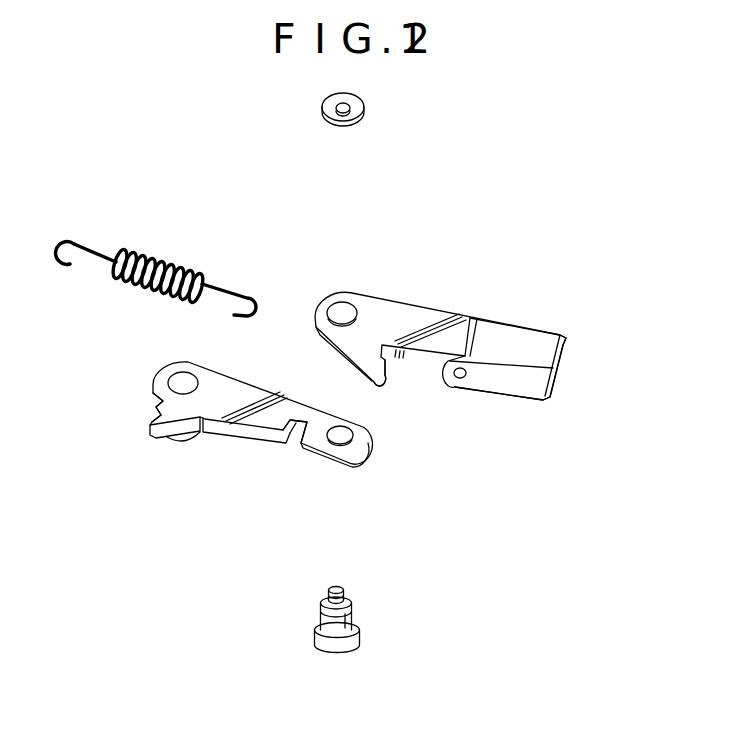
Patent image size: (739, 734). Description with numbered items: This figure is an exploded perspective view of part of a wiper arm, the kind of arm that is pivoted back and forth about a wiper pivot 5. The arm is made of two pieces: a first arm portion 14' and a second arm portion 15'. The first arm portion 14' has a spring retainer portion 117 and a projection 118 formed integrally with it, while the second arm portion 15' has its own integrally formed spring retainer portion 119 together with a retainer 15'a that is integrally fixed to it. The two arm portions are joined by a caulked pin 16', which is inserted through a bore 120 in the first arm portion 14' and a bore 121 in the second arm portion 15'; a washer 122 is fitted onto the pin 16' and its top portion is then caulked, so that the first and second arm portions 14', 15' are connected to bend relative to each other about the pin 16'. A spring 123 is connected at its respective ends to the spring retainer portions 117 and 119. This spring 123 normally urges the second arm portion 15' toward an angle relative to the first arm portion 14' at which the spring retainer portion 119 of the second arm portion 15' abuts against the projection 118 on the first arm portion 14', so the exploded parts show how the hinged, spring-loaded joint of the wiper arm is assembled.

The wiper pivot 5 is at (182, 382).
The first arm portion 14' is at (263, 414).
The second arm portion 15' is at (441, 331).
The retainer 15'a is at (511, 336).
The caulked pin 16' is at (312, 620).
The spring retainer portion 117 is at (153, 440).
The projection 118 is at (293, 445).
The spring retainer portion 119 is at (385, 378).
The bore 120 is at (360, 452).
The bore 121 is at (347, 303).
The washer 122 is at (365, 118).
The spring 123 is at (180, 268).